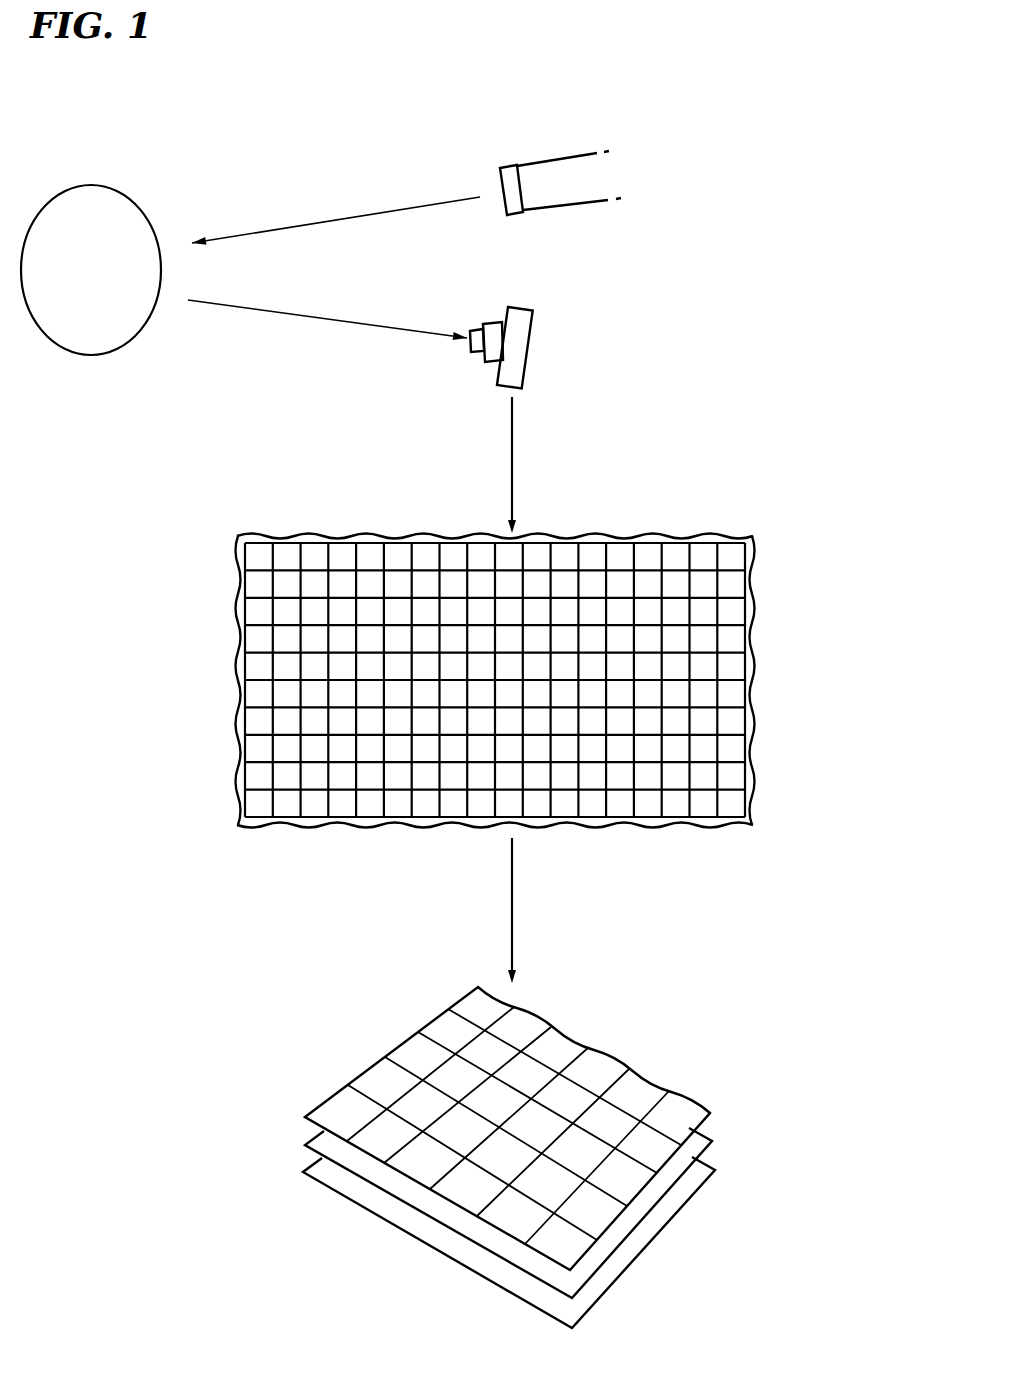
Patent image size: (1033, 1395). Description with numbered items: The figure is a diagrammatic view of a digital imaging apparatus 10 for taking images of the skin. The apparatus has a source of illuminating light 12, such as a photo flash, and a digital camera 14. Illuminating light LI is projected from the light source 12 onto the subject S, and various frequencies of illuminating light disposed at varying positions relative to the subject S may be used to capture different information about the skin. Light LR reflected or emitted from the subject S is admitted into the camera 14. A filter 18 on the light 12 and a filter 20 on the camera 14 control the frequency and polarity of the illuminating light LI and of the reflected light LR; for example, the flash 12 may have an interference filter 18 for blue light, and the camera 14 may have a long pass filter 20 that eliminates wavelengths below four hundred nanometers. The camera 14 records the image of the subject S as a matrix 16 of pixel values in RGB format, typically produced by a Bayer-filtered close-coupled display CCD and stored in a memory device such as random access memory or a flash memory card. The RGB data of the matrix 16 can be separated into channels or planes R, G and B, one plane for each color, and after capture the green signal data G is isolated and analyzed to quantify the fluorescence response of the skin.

The digital imaging apparatus 10 is at (437, 132).
The source of illuminating light 12 is at (560, 157).
The digital camera 14 is at (512, 347).
The matrix of pixel values 16 is at (757, 565).
The filter 18 is at (505, 167).
The filter 20 is at (470, 352).
The subject S is at (93, 292).
The illuminating light LI is at (290, 223).
The reflected light LR is at (277, 313).
The green plane G is at (677, 1090).
The red plane R is at (687, 1170).
The blue plane B is at (683, 1202).